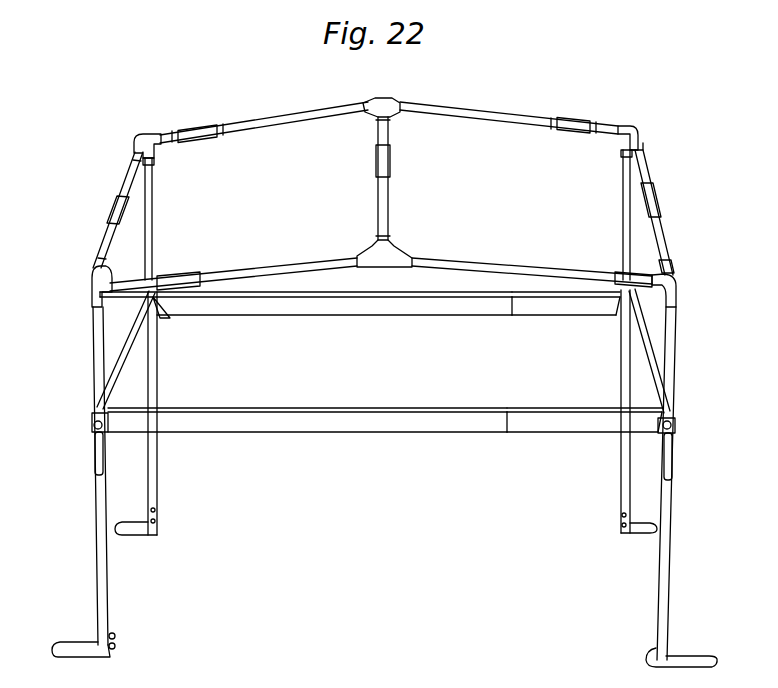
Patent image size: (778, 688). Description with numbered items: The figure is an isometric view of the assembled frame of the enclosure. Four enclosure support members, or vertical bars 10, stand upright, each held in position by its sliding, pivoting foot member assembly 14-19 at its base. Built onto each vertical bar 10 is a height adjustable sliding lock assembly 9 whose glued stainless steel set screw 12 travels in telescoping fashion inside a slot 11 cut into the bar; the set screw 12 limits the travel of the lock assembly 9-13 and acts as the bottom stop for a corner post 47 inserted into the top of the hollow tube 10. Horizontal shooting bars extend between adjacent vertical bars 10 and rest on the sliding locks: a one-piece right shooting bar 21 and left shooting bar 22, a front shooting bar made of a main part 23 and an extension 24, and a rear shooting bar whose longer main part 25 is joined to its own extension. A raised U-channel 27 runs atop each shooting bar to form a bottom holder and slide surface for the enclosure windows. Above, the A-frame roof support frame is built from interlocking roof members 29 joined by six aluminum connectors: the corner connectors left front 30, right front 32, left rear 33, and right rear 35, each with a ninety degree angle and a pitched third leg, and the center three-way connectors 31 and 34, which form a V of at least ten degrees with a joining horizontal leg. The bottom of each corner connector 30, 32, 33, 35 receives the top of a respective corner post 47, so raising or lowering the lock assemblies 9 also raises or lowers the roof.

The height adjustable sliding lock assembly 9 is at (675, 422).
The vertical bar main tube 10 is at (152, 472).
The slot 11 is at (92, 460).
The glued set screw 12 is at (673, 427).
The height adjustable sliding lock assembly components 9-13 is at (157, 300).
The pivoting foot member assembly 14-19 is at (108, 638).
The right shooting bar 21 is at (123, 360).
The left shooting bar 22 is at (645, 373).
The front shooting bar main part 23 is at (330, 307).
The front shooting bar extension 24 is at (572, 303).
The rear shooting bar main part 25 is at (388, 422).
The raised U-channel 27 is at (125, 321).
The roof members 29 is at (233, 133).
The left front corner connector 30 is at (143, 135).
The front center roof connector 31 is at (386, 84).
The right front corner connector 32 is at (634, 127).
The left rear corner connector 33 is at (92, 284).
The rear center roof connector 34 is at (372, 256).
The right rear corner connector 35 is at (657, 280).
The corner post 47 is at (148, 194).